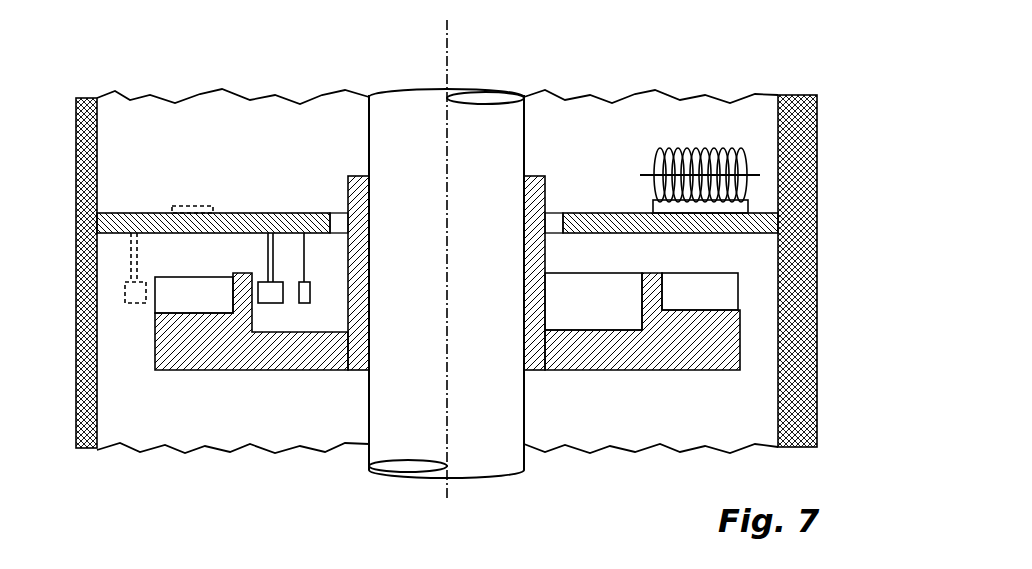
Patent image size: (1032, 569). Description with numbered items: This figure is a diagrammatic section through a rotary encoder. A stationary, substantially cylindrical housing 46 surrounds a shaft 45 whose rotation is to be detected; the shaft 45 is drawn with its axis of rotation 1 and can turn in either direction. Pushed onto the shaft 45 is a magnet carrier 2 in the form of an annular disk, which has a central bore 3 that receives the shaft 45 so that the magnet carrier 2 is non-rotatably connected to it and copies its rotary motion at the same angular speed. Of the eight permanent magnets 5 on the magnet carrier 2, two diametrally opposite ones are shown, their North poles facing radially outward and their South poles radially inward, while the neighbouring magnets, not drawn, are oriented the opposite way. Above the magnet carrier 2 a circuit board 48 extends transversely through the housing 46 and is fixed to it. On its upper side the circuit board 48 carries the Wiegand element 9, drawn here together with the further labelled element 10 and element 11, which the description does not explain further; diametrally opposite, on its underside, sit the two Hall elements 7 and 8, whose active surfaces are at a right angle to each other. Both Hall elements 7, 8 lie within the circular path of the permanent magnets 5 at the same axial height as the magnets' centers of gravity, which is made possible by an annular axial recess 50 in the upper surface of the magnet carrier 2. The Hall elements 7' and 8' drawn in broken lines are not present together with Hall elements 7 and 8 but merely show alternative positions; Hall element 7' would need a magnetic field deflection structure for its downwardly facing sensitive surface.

The axis of rotation 1 is at (450, 43).
The magnet carrier 2 is at (672, 365).
The central bore 3 is at (374, 195).
The permanent magnets 5 is at (200, 293).
The Hall element 7 is at (324, 317).
The Hall element 7' is at (192, 172).
The Hall element 8 is at (281, 317).
The Hall element 8' is at (135, 299).
The Wiegand element 9 is at (628, 185).
The coil axis 10 is at (653, 174).
The coil 11 is at (728, 152).
The shaft 45 is at (505, 463).
The housing 46 is at (810, 391).
The circuit board 48 is at (262, 213).
The annular axial recess 50 is at (599, 311).